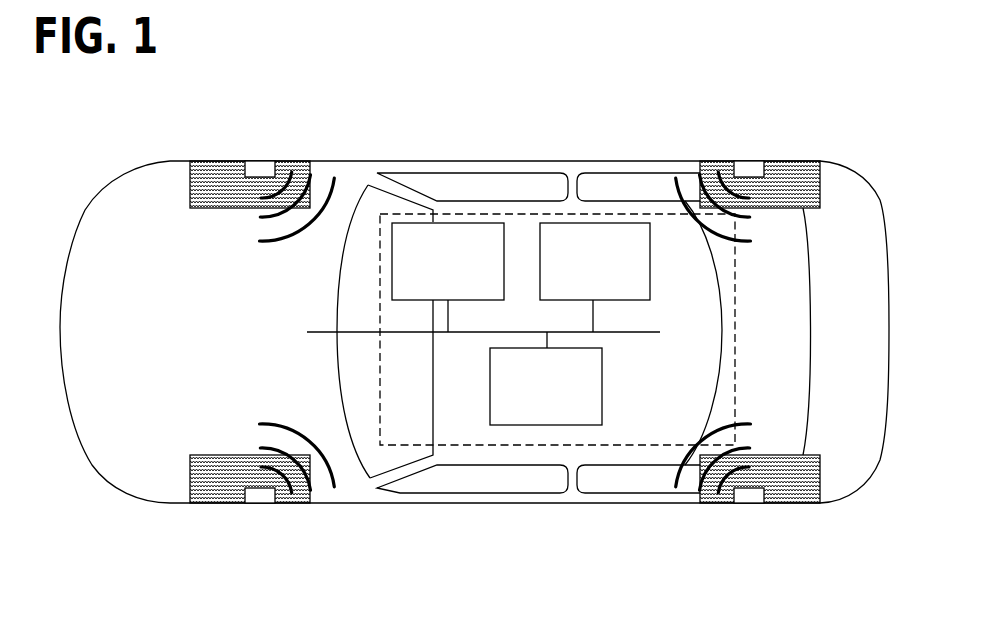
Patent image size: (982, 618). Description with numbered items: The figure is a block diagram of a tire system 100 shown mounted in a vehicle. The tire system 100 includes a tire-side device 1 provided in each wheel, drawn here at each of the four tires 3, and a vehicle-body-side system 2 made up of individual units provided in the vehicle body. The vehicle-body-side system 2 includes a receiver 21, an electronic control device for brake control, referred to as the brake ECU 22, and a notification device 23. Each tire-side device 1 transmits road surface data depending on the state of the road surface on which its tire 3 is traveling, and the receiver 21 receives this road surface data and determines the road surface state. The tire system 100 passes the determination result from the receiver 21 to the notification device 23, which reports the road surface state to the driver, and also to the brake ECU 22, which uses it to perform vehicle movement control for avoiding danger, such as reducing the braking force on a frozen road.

The tire system 100 is at (390, 138).
The tire-side device 1 is at (254, 162).
The vehicle-body-side system 2 is at (670, 214).
The tire 3 is at (190, 187).
The receiver 21 is at (547, 426).
The brake ECU 22 is at (605, 223).
The notification device 23 is at (460, 223).